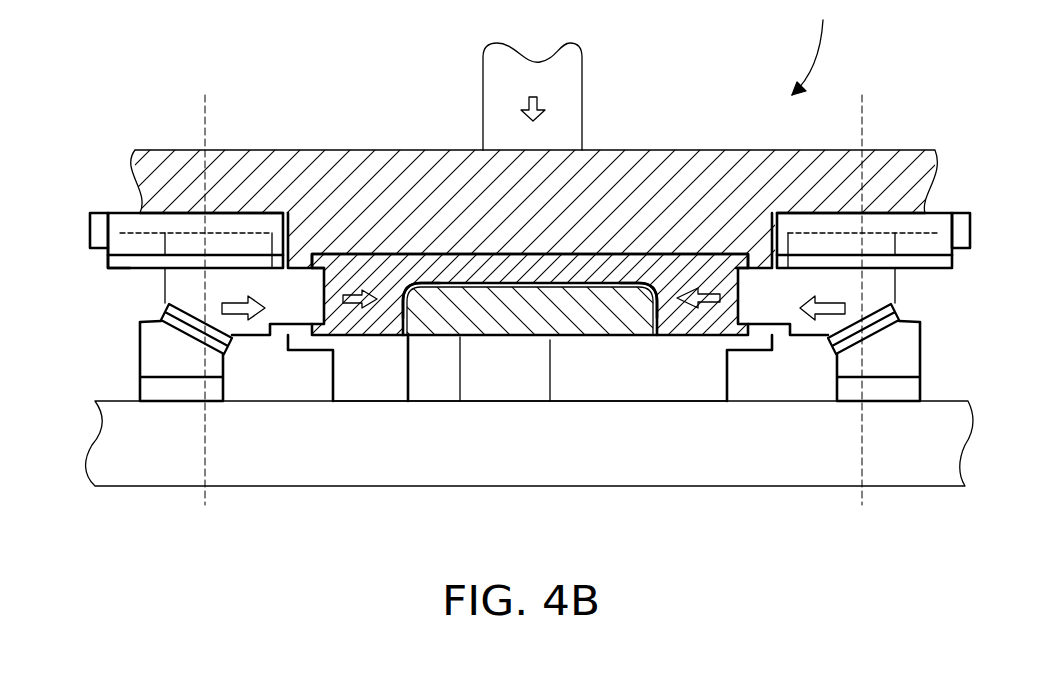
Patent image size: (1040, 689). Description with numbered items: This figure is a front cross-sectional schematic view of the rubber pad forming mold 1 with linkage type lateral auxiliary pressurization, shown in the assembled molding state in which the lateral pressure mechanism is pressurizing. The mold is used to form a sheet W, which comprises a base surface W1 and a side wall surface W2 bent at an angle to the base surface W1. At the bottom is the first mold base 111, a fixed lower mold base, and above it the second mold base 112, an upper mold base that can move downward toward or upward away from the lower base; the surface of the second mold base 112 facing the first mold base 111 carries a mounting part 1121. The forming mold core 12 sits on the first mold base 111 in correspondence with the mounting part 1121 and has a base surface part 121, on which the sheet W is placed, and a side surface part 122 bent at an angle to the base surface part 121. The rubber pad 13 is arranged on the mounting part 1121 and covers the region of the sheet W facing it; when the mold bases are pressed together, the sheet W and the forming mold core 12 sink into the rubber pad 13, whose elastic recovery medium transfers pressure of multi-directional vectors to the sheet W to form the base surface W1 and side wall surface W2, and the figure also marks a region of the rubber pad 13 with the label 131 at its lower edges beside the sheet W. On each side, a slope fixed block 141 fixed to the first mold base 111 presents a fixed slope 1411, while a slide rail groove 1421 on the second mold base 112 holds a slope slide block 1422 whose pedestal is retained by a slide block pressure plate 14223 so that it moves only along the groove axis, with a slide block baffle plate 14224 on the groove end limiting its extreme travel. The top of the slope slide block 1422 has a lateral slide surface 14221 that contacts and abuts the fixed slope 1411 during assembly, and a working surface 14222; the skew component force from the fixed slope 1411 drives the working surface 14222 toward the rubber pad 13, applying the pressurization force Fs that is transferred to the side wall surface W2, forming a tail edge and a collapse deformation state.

The rubber pad forming mold 1 is at (809, 47).
The first mold base 111 is at (312, 490).
The second mold base 112 is at (377, 150).
The mounting part 1121 is at (647, 265).
The forming mold core 12 is at (617, 337).
The base surface part 121 is at (460, 401).
The side surface part 122 is at (408, 401).
The rubber pad 13 is at (668, 290).
The pressing block edge 131 is at (405, 342).
The slope fixed block 141 is at (923, 347).
The fixed slope 1411 is at (897, 305).
The slide rail groove 1421 is at (137, 227).
The slope slide block 1422 is at (589, 305).
The lateral slide surface 14221 is at (187, 327).
The working surface 14222 is at (345, 345).
The slide block pressure plate 14223 is at (118, 270).
The slide block baffle plate 14224 is at (90, 227).
The sheet W is at (480, 337).
The base surface W1 is at (550, 401).
The side wall surface W2 is at (387, 283).
The pressurization force Fs is at (536, 296).